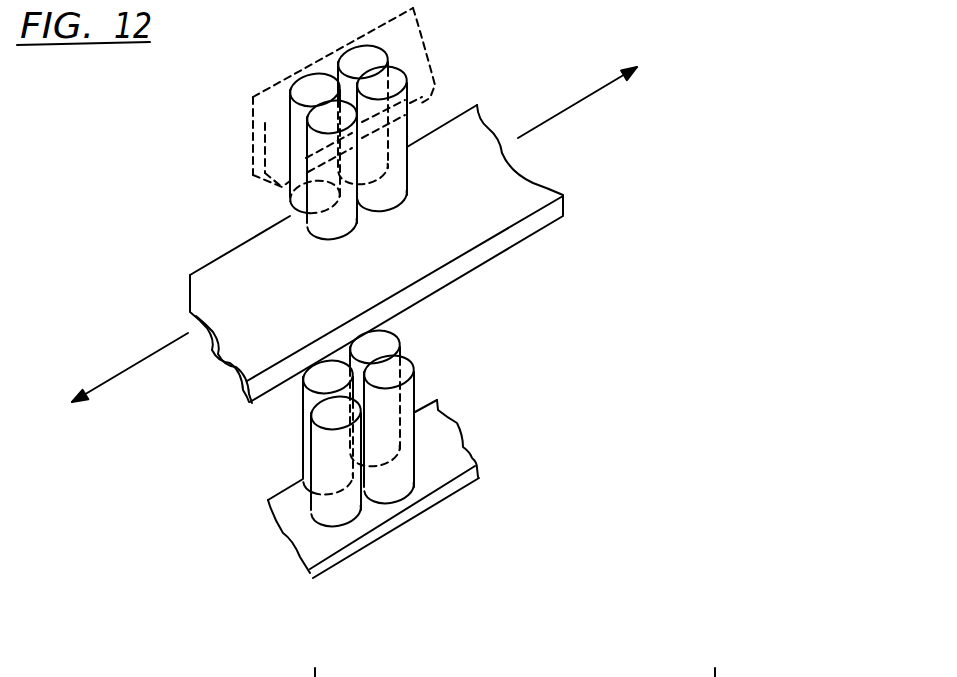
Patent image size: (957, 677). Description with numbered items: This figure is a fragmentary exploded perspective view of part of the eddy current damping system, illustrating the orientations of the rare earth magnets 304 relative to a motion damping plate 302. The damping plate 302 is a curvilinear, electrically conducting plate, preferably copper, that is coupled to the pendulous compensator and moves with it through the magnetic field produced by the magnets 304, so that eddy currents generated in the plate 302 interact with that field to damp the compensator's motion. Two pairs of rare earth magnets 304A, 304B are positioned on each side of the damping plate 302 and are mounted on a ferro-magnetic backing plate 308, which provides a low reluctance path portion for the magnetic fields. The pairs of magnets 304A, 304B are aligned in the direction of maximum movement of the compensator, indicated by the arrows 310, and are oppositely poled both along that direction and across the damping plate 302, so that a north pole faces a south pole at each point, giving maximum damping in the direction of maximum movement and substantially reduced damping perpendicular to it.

The motion damping plate 302 is at (542, 228).
The rare earth magnets 304 is at (405, 305).
The pair of rare earth magnets 304A is at (390, 227).
The pair of rare earth magnets 304B is at (340, 47).
The backing plate 308 is at (478, 477).
The arrows 310 is at (539, 122).